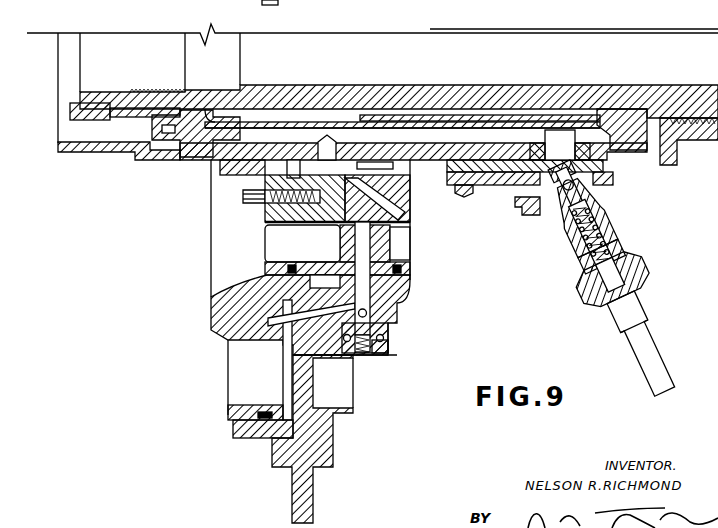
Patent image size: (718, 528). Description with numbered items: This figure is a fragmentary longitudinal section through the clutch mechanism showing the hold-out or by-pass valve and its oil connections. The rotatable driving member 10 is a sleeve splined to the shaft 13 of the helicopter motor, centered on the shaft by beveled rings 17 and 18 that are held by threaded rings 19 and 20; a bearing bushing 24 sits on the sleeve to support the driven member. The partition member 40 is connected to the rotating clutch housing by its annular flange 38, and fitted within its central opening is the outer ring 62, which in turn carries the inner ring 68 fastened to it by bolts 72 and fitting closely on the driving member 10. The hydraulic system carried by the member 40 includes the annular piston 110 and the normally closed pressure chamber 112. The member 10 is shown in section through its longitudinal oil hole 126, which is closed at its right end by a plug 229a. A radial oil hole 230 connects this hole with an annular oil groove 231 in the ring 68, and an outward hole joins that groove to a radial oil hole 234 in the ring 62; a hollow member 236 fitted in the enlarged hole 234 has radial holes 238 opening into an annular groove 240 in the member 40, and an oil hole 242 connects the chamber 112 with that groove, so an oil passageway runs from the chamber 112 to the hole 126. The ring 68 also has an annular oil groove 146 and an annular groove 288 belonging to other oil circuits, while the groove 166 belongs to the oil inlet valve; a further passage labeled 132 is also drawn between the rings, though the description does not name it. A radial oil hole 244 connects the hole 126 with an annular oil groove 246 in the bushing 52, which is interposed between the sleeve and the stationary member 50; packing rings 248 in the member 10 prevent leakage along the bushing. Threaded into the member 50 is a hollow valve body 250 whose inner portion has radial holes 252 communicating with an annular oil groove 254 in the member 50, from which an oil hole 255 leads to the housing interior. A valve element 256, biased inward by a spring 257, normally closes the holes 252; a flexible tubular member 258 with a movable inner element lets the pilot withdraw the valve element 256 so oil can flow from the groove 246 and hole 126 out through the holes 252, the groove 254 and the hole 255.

The driving member 10 is at (187, 162).
The shaft 13 is at (560, 93).
The beveled ring 17 is at (617, 140).
The beveled ring 18 is at (157, 161).
The ring 19 is at (687, 137).
The ring 20 is at (110, 117).
The bearing bushing 24 is at (233, 173).
The annular flange 38 is at (312, 493).
The partition member 40 is at (382, 317).
The nonrotatable member 50 is at (498, 186).
The bearing bushing 52 is at (480, 197).
The outer ring 62 is at (263, 267).
The inner ring 68 is at (413, 210).
The bolts 72 is at (238, 228).
The piston 110 is at (242, 405).
The annular chamber 112 is at (271, 371).
The longitudinal oil hole 126 is at (250, 130).
The passage 132 is at (347, 193).
The annular oil groove 146 is at (388, 153).
The annular oil groove 166 is at (317, 273).
The plug 229a is at (662, 82).
The radial oil hole 230 is at (330, 143).
The annular oil groove 231 is at (349, 160).
The radial oil hole 234 is at (348, 237).
The hollow member 236 is at (390, 350).
The radial holes 238 is at (370, 313).
The annular groove 240 is at (388, 330).
The oil hole 242 is at (300, 328).
The radial oil hole 244 is at (563, 147).
The annular oil groove 246 is at (545, 152).
The packing rings 248 is at (535, 150).
The valve body 250 is at (620, 222).
The radial holes 252 is at (557, 216).
The annular oil groove 254 is at (603, 180).
The oil hole 255 is at (540, 195).
The valve element 256 is at (567, 247).
The spring 257 is at (630, 238).
The flexible tubular member 258 is at (650, 333).
The annular groove 288 is at (290, 165).